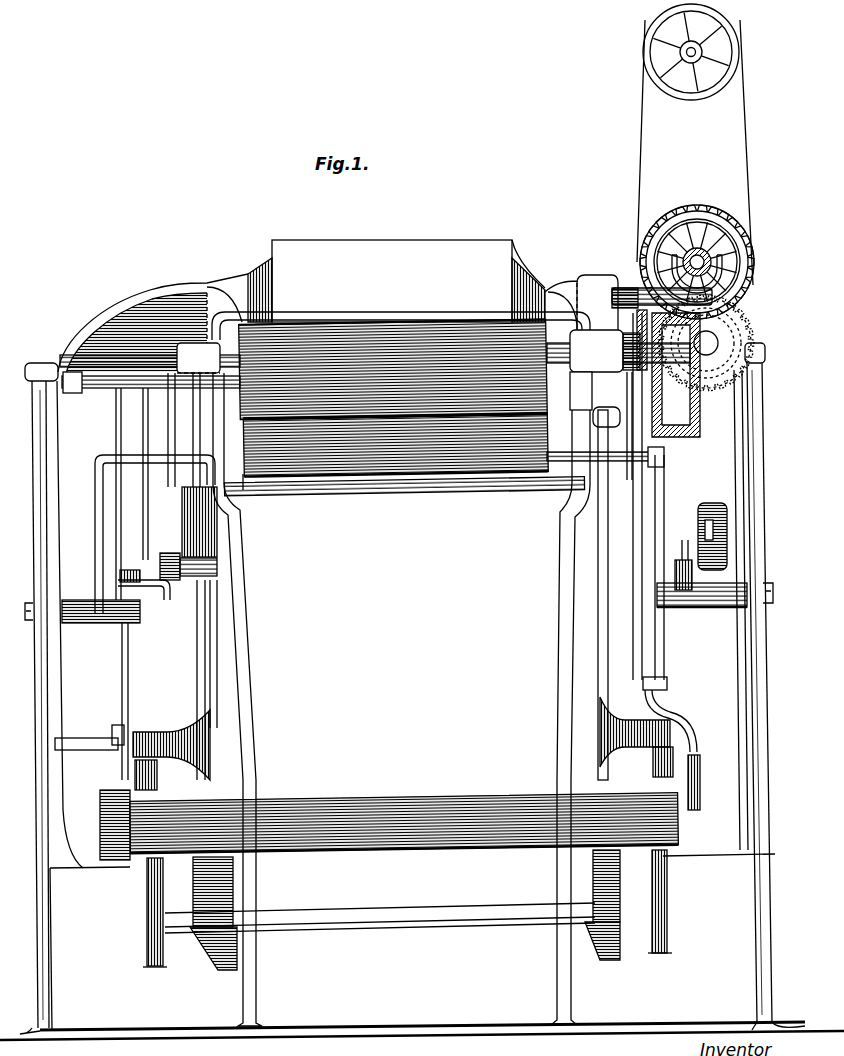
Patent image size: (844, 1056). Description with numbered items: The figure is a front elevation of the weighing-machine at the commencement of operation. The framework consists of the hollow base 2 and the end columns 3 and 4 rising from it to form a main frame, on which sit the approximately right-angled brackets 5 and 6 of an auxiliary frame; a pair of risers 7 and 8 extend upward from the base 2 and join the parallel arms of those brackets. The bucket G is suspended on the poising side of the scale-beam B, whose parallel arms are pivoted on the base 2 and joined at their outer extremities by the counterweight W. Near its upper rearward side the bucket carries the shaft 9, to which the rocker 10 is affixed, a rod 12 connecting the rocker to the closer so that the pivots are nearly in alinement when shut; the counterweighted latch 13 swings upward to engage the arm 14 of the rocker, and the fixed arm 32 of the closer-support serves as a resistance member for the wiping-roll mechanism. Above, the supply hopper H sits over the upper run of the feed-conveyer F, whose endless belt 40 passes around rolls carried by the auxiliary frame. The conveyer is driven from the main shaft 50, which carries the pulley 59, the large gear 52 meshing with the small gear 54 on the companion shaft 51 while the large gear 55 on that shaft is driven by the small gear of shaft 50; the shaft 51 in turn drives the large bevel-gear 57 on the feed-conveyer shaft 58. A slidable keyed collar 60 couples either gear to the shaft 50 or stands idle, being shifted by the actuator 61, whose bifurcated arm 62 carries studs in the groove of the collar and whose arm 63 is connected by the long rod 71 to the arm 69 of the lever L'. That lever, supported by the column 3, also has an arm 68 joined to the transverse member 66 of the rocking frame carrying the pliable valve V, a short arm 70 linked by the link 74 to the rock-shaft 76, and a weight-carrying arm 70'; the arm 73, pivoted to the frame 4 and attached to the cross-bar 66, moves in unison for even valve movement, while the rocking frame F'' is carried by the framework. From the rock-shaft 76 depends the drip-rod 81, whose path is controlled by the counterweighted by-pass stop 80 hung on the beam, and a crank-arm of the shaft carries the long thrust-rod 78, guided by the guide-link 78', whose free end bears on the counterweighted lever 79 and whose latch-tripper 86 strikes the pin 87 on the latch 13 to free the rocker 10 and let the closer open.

The hollow base 2 is at (422, 947).
The end frame or column 3 is at (762, 540).
The end frame or column 4 is at (32, 538).
The right-angled bracket 5 is at (598, 278).
The right-angled bracket 6 is at (176, 285).
The riser 7 is at (557, 638).
The riser 8 is at (250, 648).
The shaft 9 is at (404, 501).
The rocker 10 is at (182, 514).
The rod 12 is at (196, 672).
The latch 13 is at (170, 592).
The arm of the rocker 14 is at (172, 553).
The fixed arm or extension of the closer-support 32 is at (190, 910).
The endless belt or band 40 is at (325, 340).
The main shaft 50 is at (705, 250).
The companion shaft 51 is at (720, 335).
The large gear 52 is at (722, 240).
The small gear 54 is at (736, 380).
The large gear 55 is at (738, 370).
The large bevel-gear 57 is at (690, 395).
The shaft of the feed-conveyer 58 is at (648, 378).
The driver or pulley 59 is at (726, 224).
The coupling device or collar 60 is at (712, 296).
The actuator for the gear-coupler 61 is at (637, 250).
The bifurcated arm 62 is at (715, 262).
The arm of the actuator 63 is at (632, 300).
The transverse member of the rocking frame 66 is at (240, 490).
The lever-arm 68 is at (660, 505).
The lever-arm 69 is at (664, 660).
The short lever-arm 70 is at (683, 595).
The weight-carrying arm 70' is at (748, 536).
The rod 71 is at (645, 482).
The arm 73 is at (94, 548).
The link 74 is at (744, 490).
The rock-shaft 76 is at (90, 389).
The thrust-rod 78 is at (103, 701).
The guide-link 78' is at (89, 726).
The counterweighted lever 79 is at (115, 818).
The by-pass stop 80 is at (695, 758).
The drip-rod 81 is at (688, 712).
The latch-tripper 86 is at (118, 579).
The projecting pin 87 is at (153, 605).
The scale-beam B is at (150, 780).
The feed-conveyer F is at (393, 369).
The feed control F'' is at (77, 518).
The bucket G is at (392, 622).
The supply chute or hopper H is at (396, 281).
The valve-actuating lever L' is at (702, 606).
The valve V is at (430, 450).
The counterweight W is at (340, 820).